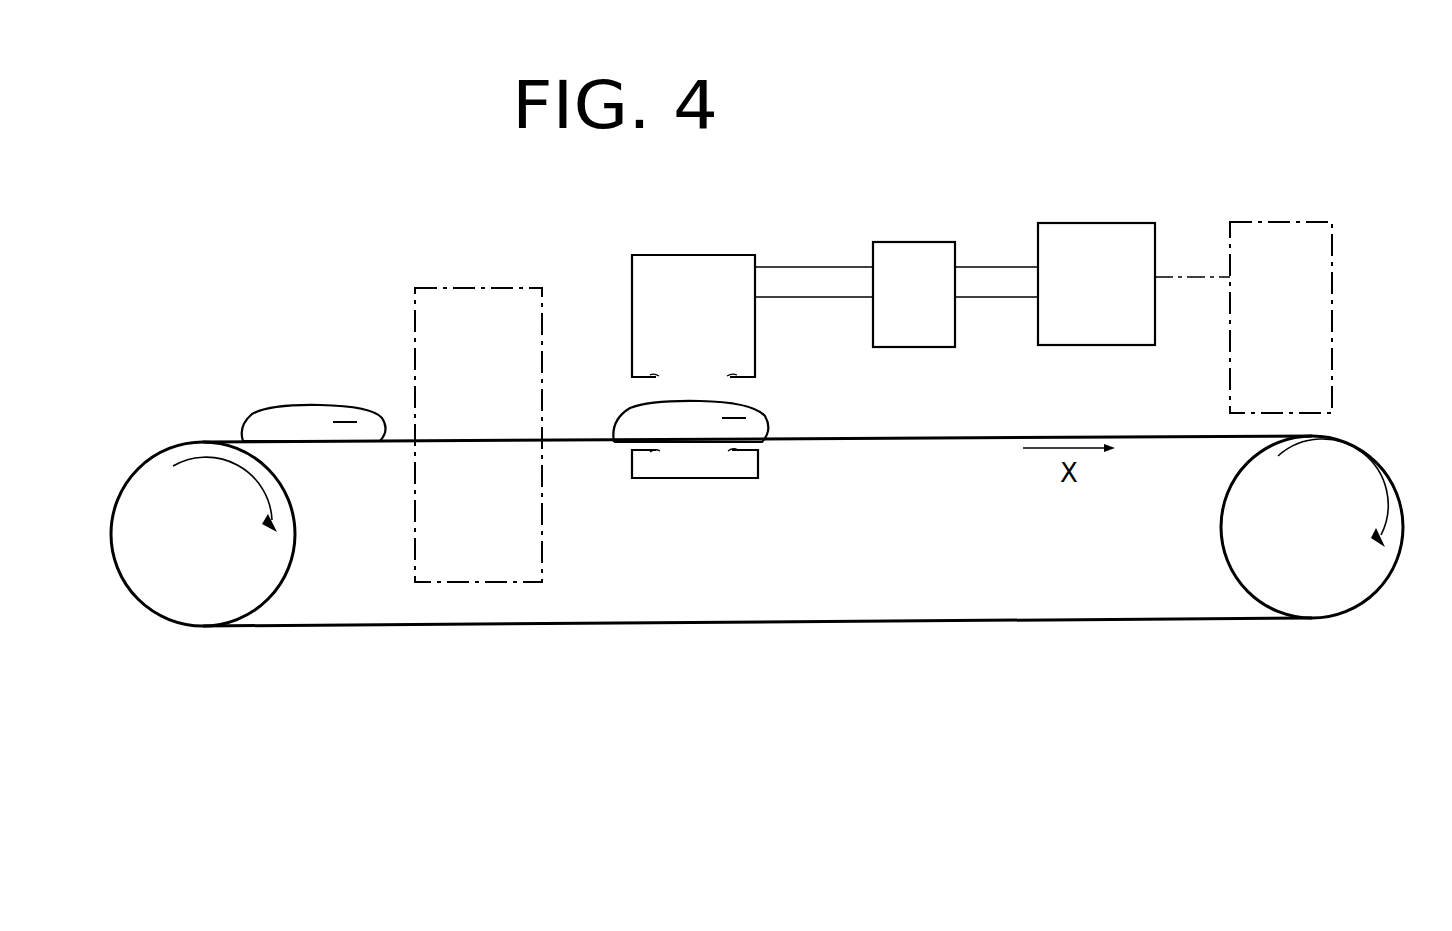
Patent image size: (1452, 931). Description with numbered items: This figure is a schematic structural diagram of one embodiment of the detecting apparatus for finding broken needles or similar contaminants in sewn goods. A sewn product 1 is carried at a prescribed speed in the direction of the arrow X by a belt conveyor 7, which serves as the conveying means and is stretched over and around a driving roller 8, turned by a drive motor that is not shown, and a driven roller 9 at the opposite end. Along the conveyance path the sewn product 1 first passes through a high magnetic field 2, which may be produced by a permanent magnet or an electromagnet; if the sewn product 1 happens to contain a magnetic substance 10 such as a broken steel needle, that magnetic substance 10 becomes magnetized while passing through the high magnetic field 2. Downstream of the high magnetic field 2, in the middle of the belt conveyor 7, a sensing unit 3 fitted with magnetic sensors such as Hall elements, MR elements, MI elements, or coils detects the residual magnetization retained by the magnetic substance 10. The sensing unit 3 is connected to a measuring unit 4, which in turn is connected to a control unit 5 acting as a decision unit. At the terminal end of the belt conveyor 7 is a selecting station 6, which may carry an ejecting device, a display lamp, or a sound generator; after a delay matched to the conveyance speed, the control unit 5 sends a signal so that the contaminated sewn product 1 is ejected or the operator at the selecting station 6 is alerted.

The sewn product 1 is at (262, 405).
The high magnetic field 2 is at (442, 288).
The sensing unit 3 is at (667, 255).
The measuring unit 4 is at (898, 242).
The control unit 5 is at (1080, 223).
The selecting station 6 is at (1260, 222).
The belt conveyor 7 is at (1008, 622).
The driving roller 8 is at (1233, 535).
The driven roller 9 is at (281, 565).
The magnetic substance 10 is at (341, 418).